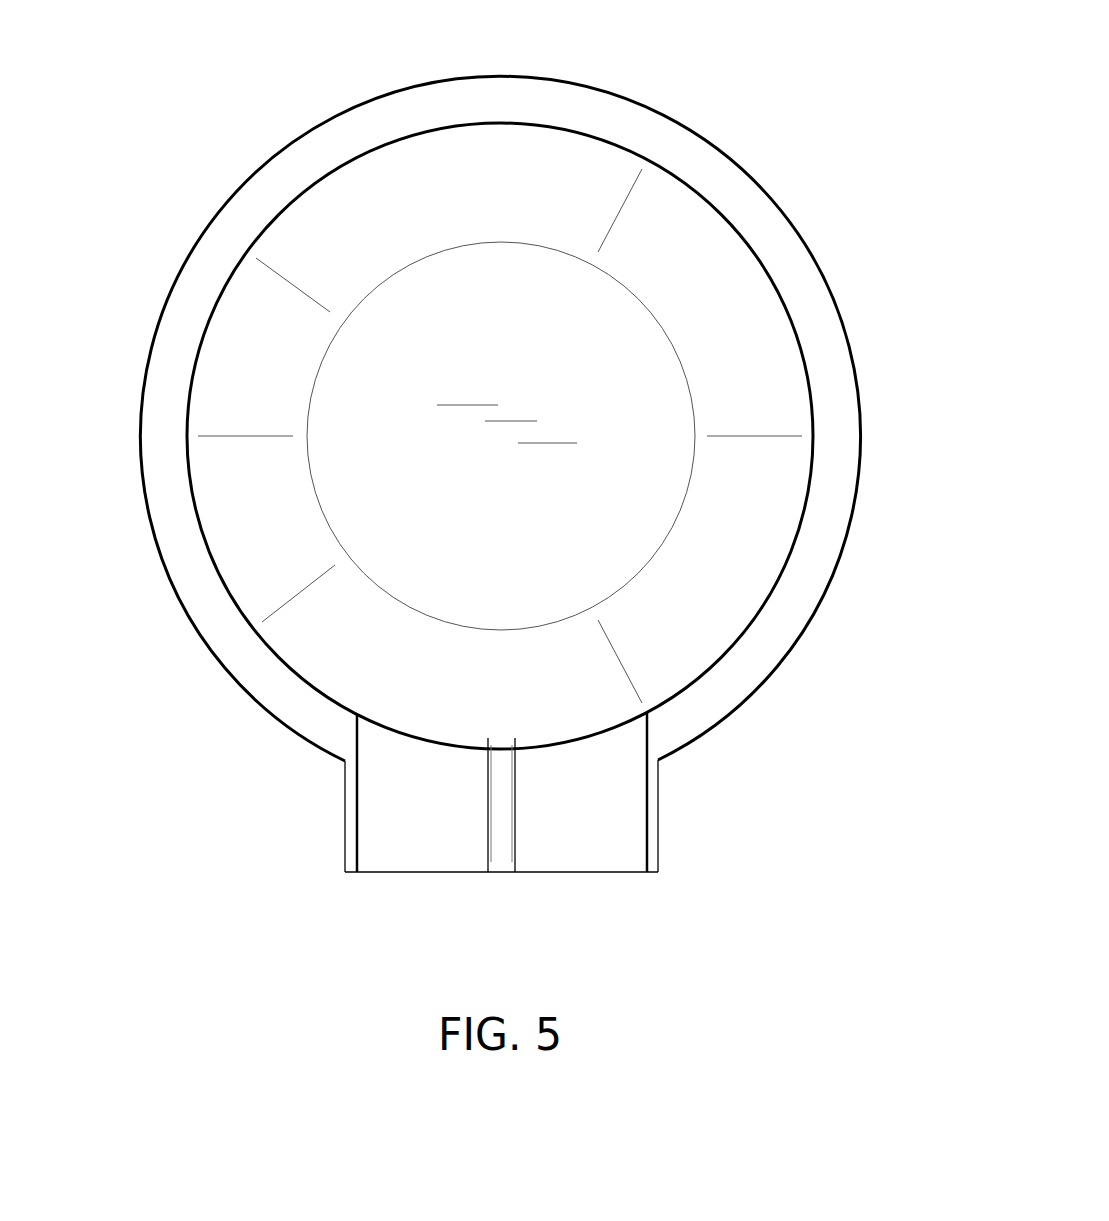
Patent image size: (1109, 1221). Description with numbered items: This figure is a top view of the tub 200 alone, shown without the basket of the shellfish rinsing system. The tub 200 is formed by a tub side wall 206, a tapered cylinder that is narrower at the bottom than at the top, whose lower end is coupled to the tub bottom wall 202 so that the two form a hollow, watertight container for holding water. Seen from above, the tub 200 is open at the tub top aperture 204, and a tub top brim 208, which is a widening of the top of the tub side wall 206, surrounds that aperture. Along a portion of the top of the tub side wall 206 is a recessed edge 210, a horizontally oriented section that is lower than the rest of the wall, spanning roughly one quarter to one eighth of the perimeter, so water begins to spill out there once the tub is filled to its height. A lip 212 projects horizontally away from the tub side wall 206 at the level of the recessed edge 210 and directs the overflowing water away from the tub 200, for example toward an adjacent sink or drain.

The tub 200 is at (129, 97).
The tub bottom wall 202 is at (620, 345).
The tub top aperture 204 is at (765, 603).
The tub side wall 206 is at (672, 228).
The tub top brim 208 is at (842, 428).
The recessed edge 210 is at (422, 740).
The lip 212 is at (578, 841).